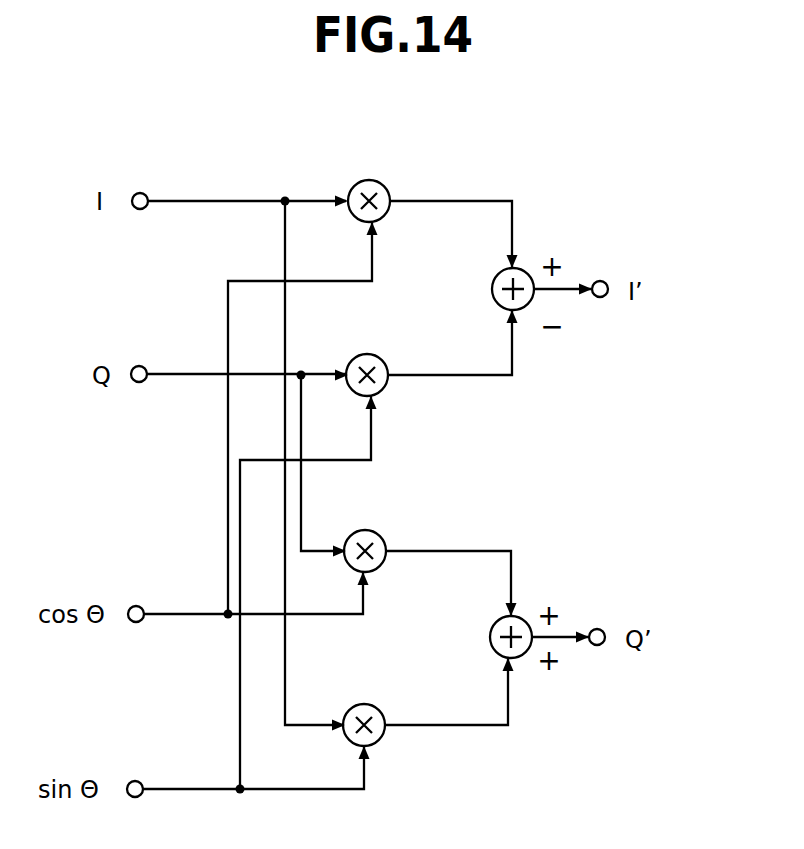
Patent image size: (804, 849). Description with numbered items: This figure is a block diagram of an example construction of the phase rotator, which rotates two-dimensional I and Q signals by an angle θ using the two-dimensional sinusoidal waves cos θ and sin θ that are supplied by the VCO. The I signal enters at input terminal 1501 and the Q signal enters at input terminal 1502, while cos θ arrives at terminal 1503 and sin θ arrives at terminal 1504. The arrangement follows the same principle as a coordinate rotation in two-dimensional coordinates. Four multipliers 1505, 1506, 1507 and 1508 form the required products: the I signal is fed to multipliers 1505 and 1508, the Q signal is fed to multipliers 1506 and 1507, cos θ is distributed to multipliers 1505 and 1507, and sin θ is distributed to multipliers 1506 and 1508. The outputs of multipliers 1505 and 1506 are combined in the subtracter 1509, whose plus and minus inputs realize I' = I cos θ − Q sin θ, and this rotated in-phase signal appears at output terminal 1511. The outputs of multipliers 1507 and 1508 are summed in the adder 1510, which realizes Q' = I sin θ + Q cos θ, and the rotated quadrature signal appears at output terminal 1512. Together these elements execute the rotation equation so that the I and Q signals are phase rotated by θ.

The input terminal 1501 is at (138, 191).
The input terminal 1502 is at (137, 364).
The cos θ input terminal 1503 is at (134, 604).
The sin θ input terminal 1504 is at (133, 779).
The multiplier 1505 is at (367, 181).
The multiplier 1506 is at (365, 355).
The multiplier 1507 is at (369, 530).
The multiplier 1508 is at (363, 705).
The subtracter 1509 is at (494, 276).
The adder 1510 is at (492, 625).
The I' output terminal 1511 is at (597, 280).
The Q' output terminal 1512 is at (594, 628).